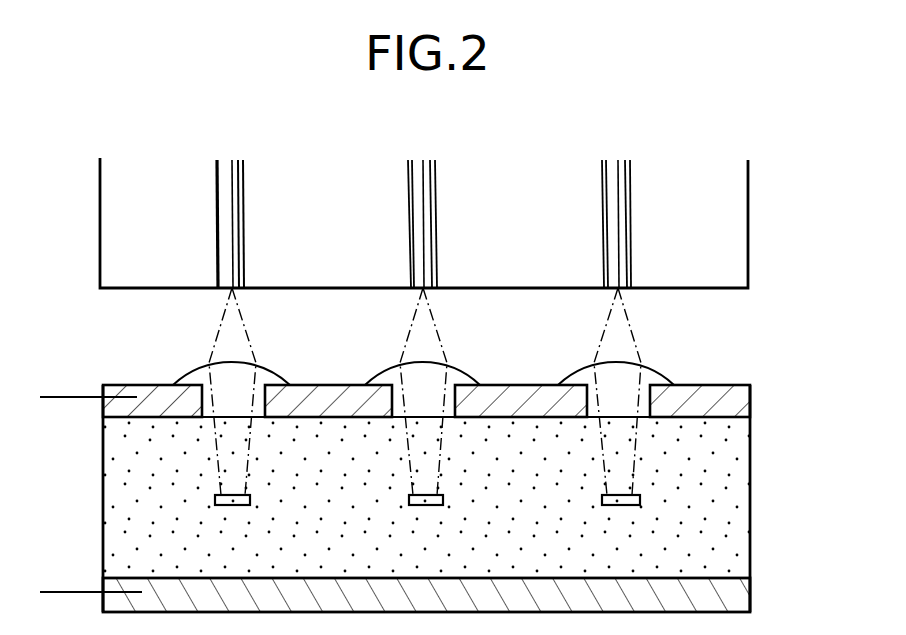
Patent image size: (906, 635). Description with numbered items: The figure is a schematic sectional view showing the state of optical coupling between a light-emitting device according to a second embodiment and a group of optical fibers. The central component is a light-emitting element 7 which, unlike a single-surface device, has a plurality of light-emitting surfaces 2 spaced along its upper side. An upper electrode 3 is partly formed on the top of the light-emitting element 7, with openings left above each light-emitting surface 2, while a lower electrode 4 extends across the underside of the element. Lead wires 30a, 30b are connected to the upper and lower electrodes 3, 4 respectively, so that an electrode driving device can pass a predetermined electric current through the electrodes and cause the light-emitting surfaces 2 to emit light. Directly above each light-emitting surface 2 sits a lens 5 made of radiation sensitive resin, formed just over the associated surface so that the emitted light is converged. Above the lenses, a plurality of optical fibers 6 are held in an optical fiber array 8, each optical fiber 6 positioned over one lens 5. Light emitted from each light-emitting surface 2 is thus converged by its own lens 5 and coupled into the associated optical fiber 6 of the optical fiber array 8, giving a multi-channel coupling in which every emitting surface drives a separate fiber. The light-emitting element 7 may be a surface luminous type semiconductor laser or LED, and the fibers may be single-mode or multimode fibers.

The light-emitting surface 2 is at (640, 500).
The upper electrode 3 is at (313, 393).
The lower electrode 4 is at (735, 598).
The lens 5 is at (458, 378).
The optical fiber 6 is at (214, 194).
The light-emitting element 7 is at (720, 533).
The optical fiber array 8 is at (732, 226).
The lead wire 30a is at (65, 397).
The lead wire 30b is at (68, 592).